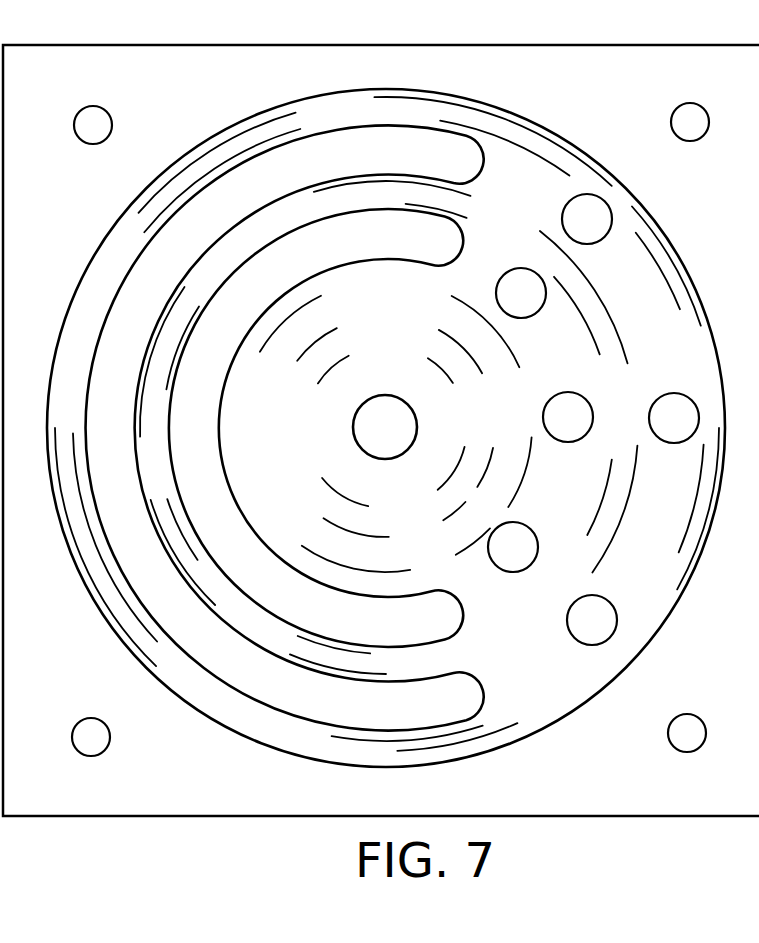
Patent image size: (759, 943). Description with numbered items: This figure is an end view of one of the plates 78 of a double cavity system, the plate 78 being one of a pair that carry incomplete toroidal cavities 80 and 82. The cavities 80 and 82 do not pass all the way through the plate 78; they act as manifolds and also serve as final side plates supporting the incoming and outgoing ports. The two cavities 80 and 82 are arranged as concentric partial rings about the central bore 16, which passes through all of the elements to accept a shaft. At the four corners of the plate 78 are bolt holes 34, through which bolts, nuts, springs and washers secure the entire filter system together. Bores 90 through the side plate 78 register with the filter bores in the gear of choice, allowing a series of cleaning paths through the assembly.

The plates 78 is at (125, 792).
The bolt holes 34 is at (98, 131).
The bore 16 is at (385, 427).
The incomplete toroidal cavity 80 is at (285, 428).
The incomplete toroidal cavity 82 is at (316, 428).
The bores 90 is at (572, 219).